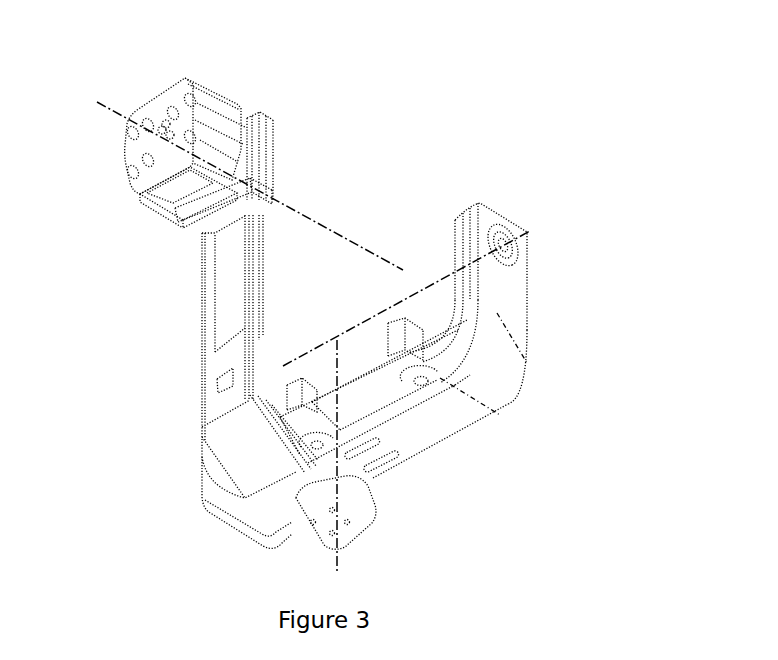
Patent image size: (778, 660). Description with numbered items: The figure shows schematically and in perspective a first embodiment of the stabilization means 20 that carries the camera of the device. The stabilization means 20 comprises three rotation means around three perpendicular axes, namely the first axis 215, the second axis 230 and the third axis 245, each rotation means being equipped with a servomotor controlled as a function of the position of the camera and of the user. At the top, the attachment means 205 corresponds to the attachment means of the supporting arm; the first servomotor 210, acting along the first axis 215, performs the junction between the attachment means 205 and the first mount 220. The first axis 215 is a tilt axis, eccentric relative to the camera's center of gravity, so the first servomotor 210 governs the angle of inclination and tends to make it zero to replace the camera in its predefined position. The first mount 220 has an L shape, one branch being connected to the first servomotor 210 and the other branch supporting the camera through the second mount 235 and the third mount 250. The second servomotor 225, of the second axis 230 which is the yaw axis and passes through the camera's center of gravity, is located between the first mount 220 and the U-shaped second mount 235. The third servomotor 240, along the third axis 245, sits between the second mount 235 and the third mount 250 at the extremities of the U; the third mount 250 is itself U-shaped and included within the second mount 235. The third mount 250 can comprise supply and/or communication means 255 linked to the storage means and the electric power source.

The stabilization means 20 is at (355, 105).
The attachment means 205 is at (175, 101).
The first servomotor 210 is at (173, 192).
The first axis 215 is at (340, 230).
The first mount 220 is at (222, 321).
The second servomotor 225 is at (345, 475).
The second axis 230 is at (337, 565).
The second mount 235 is at (435, 425).
The third servomotor 240 is at (190, 400).
The third axis 245 is at (530, 229).
The third mount 250 is at (445, 327).
The supply and/or communication means 255 is at (395, 345).